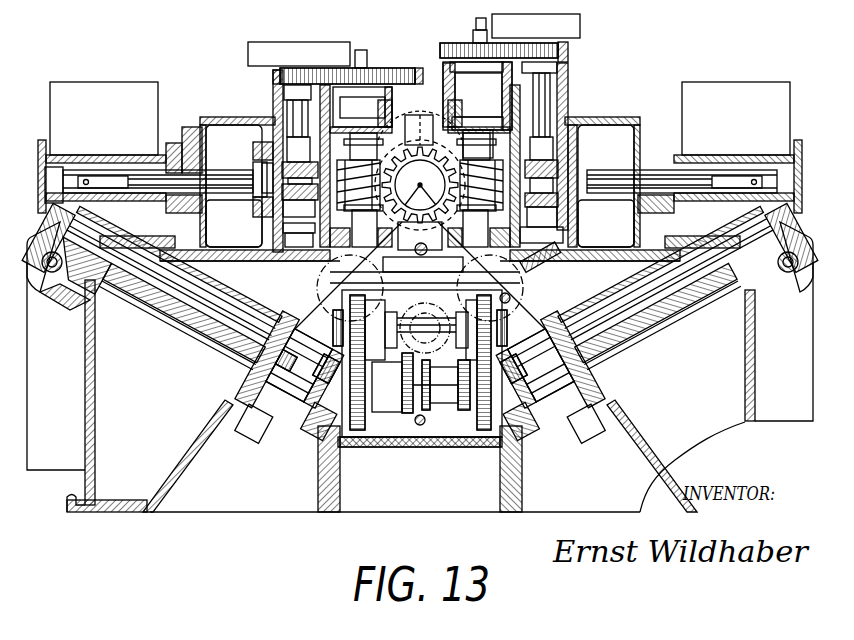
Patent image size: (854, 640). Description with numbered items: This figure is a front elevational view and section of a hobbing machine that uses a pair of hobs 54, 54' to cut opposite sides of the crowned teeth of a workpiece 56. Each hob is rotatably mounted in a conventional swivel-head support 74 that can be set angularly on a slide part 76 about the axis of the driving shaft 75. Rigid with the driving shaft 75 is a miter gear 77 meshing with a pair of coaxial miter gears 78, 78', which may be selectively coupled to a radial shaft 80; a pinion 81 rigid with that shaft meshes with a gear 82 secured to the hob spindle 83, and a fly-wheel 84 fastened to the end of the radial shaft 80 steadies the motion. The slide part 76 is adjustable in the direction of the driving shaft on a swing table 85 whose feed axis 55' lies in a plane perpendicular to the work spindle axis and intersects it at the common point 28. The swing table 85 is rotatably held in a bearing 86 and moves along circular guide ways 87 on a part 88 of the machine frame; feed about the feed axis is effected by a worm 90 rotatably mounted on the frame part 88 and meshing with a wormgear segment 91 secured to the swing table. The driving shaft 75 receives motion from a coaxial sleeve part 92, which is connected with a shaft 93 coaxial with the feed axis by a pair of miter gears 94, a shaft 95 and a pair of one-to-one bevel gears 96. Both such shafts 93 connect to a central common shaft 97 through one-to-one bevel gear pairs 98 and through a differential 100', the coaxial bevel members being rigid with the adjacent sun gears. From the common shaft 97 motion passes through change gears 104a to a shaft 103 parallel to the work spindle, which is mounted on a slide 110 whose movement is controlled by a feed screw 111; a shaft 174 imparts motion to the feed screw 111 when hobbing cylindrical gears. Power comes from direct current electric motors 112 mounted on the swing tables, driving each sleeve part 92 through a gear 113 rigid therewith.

The point 28 is at (420, 185).
The hob 54 is at (358, 174).
The hob 54' is at (481, 174).
The feed axis 55' is at (276, 384).
The workpiece 56 is at (416, 140).
The swivel-head support 74 is at (322, 85).
The driving shaft 75 is at (216, 206).
The slide part 76 is at (212, 118).
The miter gear 77 is at (256, 182).
The miter gear 78 is at (388, 159).
The miter gear 78' is at (391, 205).
The radial shaft 80 is at (298, 117).
The pinion 81 is at (273, 76).
The gear 82 is at (372, 69).
The hob spindle 83 is at (398, 69).
The fly-wheel 84 is at (298, 42).
The swing table 85 is at (230, 286).
The bearing 86 is at (292, 434).
The circular guide ways 87 is at (104, 286).
The part of machine frame 88 is at (86, 368).
The worm 90 is at (40, 282).
The wormgear segment 91 is at (65, 300).
The sleeve part 92 is at (107, 172).
The shaft 93 is at (326, 367).
The miter gears 94 is at (292, 375).
The shaft 95 is at (233, 323).
The bevel gears 96 is at (70, 176).
The central common shaft 97 is at (407, 340).
The bevel gear pairs 98 is at (335, 325).
The differential 100' is at (405, 284).
The shaft 103 is at (518, 302).
The change gears 104a is at (540, 262).
The slide 110 is at (420, 276).
The feed screw 111 is at (420, 238).
The electric motors 112 is at (162, 114).
The gear 113 is at (180, 125).
The shaft 174 is at (383, 259).